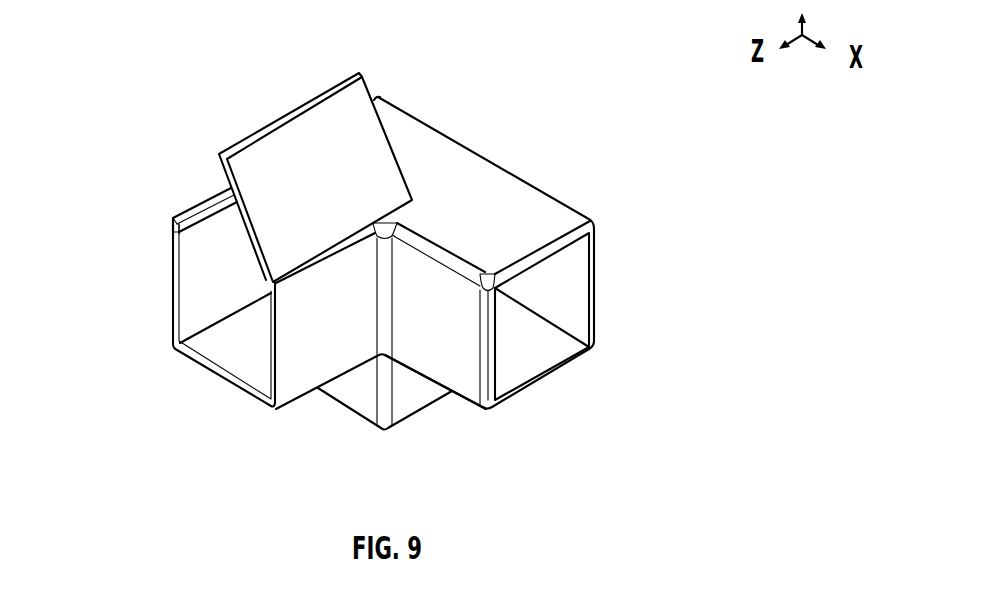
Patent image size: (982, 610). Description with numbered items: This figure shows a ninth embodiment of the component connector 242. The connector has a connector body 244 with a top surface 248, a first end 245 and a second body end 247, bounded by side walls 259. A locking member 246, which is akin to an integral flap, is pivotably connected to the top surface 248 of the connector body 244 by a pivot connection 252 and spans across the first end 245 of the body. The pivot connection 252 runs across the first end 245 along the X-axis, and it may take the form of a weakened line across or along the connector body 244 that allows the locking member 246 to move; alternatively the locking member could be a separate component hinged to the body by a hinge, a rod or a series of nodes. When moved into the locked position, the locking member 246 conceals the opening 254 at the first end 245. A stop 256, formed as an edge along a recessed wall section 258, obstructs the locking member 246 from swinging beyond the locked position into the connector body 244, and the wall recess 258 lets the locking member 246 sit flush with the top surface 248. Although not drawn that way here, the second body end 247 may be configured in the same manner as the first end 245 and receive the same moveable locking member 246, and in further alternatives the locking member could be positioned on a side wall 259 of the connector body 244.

The component connector 242 is at (452, 90).
The connector body 244 is at (378, 387).
The first end 245 is at (233, 363).
The locking member 246 is at (367, 137).
The second body end 247 is at (545, 307).
The top surface 248 is at (433, 193).
The pivot connection 252 is at (590, 177).
The opening 254 is at (243, 272).
The stop 256 is at (196, 214).
The recessed wall section 258 is at (175, 218).
The side wall 259 is at (343, 318).